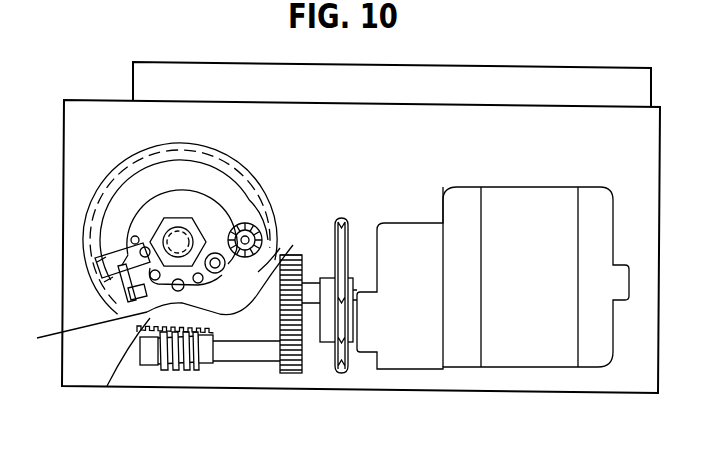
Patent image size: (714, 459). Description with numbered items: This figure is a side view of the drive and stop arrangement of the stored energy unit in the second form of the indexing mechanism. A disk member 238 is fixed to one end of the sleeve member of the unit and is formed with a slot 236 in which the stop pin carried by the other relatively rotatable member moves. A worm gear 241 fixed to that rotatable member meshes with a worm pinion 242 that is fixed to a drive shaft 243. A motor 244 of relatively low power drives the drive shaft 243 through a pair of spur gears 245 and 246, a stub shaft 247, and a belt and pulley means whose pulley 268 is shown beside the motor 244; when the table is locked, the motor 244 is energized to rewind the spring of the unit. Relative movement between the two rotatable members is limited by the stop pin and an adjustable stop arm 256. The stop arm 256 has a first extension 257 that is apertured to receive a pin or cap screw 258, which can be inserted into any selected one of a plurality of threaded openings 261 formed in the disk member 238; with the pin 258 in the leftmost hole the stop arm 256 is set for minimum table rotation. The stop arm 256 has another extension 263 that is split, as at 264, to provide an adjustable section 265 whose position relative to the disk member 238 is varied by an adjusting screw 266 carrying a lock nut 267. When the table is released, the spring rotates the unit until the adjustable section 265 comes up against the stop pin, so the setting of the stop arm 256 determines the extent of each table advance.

The slot 236 is at (222, 173).
The disk member 238 is at (241, 309).
The worm gear 241 is at (137, 323).
The worm pinion 242 is at (165, 366).
The drive shaft 243 is at (228, 352).
The motor 244 is at (518, 187).
The spur gear 245 is at (293, 373).
The spur gear 246 is at (282, 256).
The stub shaft 247 is at (312, 292).
The adjustable stop arm 256 is at (214, 230).
The first extension 257 is at (254, 228).
The pin or cap screw 258 is at (258, 272).
The threaded openings 261 is at (181, 291).
The extension 263 is at (152, 276).
The split 264 is at (96, 270).
The adjustable section 265 is at (99, 268).
The adjusting screw 266 is at (73, 331).
The lock nut 267 is at (133, 294).
The pulley 268 is at (349, 238).